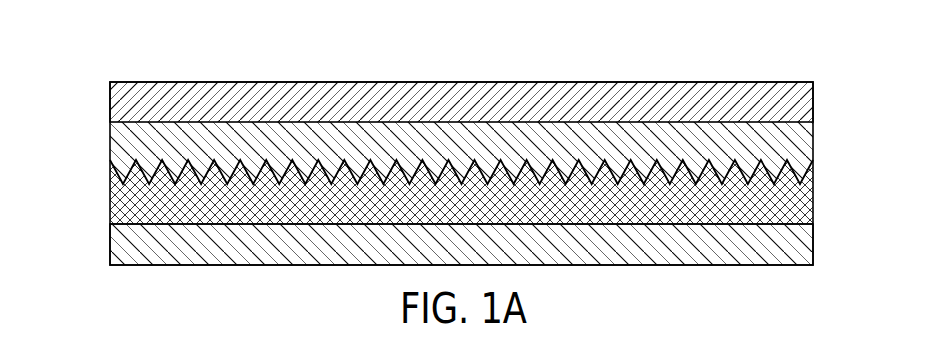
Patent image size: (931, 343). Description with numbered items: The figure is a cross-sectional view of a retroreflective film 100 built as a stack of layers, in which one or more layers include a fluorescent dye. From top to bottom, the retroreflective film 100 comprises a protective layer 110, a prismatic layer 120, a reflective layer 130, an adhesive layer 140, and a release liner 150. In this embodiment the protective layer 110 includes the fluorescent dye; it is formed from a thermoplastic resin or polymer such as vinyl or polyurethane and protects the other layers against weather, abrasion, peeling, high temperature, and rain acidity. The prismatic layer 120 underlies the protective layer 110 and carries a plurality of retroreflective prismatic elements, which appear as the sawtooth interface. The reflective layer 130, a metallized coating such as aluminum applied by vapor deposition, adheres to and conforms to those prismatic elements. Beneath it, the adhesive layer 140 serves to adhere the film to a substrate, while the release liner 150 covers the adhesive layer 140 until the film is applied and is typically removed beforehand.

The retroreflective film 100 is at (113, 68).
The protective layer 110 is at (110, 105).
The prismatic layer 120 is at (110, 150).
The reflective layer 130 is at (808, 170).
The adhesive layer 140 is at (110, 206).
The release liner 150 is at (110, 250).